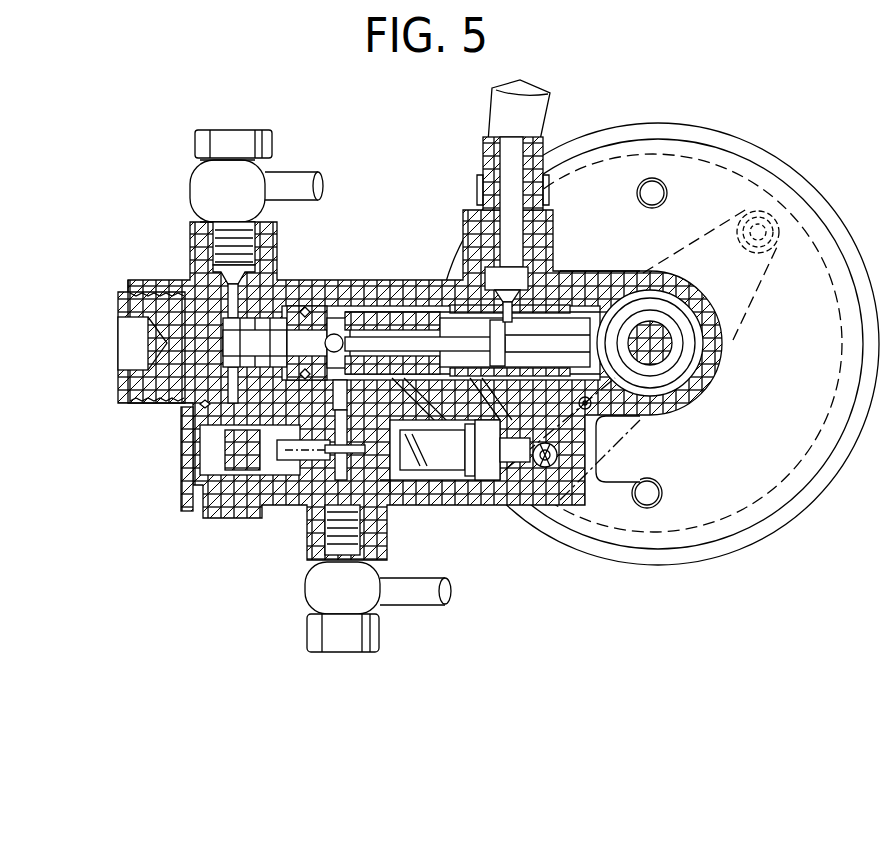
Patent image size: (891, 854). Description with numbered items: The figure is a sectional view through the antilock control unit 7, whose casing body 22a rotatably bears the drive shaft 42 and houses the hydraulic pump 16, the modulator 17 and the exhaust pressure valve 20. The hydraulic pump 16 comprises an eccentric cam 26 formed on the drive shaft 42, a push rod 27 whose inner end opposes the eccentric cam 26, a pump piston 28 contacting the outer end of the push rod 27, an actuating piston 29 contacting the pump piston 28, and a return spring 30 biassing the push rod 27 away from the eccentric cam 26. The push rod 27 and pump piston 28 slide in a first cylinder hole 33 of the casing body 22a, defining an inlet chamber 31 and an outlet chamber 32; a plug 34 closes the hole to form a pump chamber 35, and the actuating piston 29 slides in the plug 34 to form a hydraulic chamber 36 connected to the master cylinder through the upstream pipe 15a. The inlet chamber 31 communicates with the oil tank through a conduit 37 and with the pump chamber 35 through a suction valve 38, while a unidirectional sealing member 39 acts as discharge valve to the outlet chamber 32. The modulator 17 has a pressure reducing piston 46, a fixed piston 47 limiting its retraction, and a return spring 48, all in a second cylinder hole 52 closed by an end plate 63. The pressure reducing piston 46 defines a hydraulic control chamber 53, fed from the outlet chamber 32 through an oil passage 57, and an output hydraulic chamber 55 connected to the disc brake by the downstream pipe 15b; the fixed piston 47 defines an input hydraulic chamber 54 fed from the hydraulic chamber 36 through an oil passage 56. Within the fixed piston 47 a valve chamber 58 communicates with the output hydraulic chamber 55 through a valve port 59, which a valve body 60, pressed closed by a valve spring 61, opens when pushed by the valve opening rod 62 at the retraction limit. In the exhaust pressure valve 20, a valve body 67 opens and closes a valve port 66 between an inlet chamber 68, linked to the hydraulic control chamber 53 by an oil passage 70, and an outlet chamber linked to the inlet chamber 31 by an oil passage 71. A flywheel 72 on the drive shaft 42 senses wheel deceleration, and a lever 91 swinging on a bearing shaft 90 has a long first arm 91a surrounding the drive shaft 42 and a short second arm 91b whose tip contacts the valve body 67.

The antilock control unit 7 is at (617, 110).
The upstream pipe 15a is at (332, 181).
The downstream pipe 15b is at (466, 585).
The hydraulic pump 16 is at (420, 330).
The modulator 17 is at (312, 492).
The exhaust pressure valve 20 is at (545, 468).
The casing body 22a is at (604, 275).
The eccentric cam 26 is at (690, 355).
The push rod 27 is at (560, 322).
The pump piston 28 is at (400, 306).
The actuating piston 29 is at (275, 338).
The return spring 30 is at (467, 342).
The inlet chamber 31 is at (522, 290).
The outlet chamber 32 is at (392, 312).
The first cylinder hole 33 is at (312, 306).
The plug 34 is at (128, 298).
The pump chamber 35 is at (292, 306).
The hydraulic chamber 36 is at (233, 322).
The conduit 37 is at (497, 112).
The suction valve 38 is at (340, 316).
The unidirectional sealing member 39 is at (340, 336).
The drive shaft 42 is at (675, 340).
The pressure reducing piston 46 is at (418, 482).
The fixed piston 47 is at (247, 492).
The return spring 48 is at (438, 470).
The second cylinder hole 52 is at (470, 480).
The hydraulic control chamber 53 is at (486, 482).
The input hydraulic chamber 54 is at (220, 436).
The output hydraulic chamber 55 is at (385, 493).
The oil passage 56 is at (205, 407).
The oil passage 57 is at (440, 382).
The valve chamber 58 is at (278, 470).
The valve port 59 is at (340, 432).
The valve body 60 is at (320, 384).
The valve spring 61 is at (270, 452).
The valve opening rod 62 is at (352, 446).
The end plate 63 is at (183, 478).
The valve port 66 is at (603, 484).
The valve body 67 is at (598, 450).
The inlet chamber 68 is at (598, 472).
The oil passage 70 is at (512, 462).
The oil passage 71 is at (490, 399).
The flywheel 72 is at (812, 470).
The bearing shaft 90 is at (560, 402).
The lever 91 is at (777, 250).
The first arm 91a is at (756, 298).
The second arm 91b is at (624, 428).